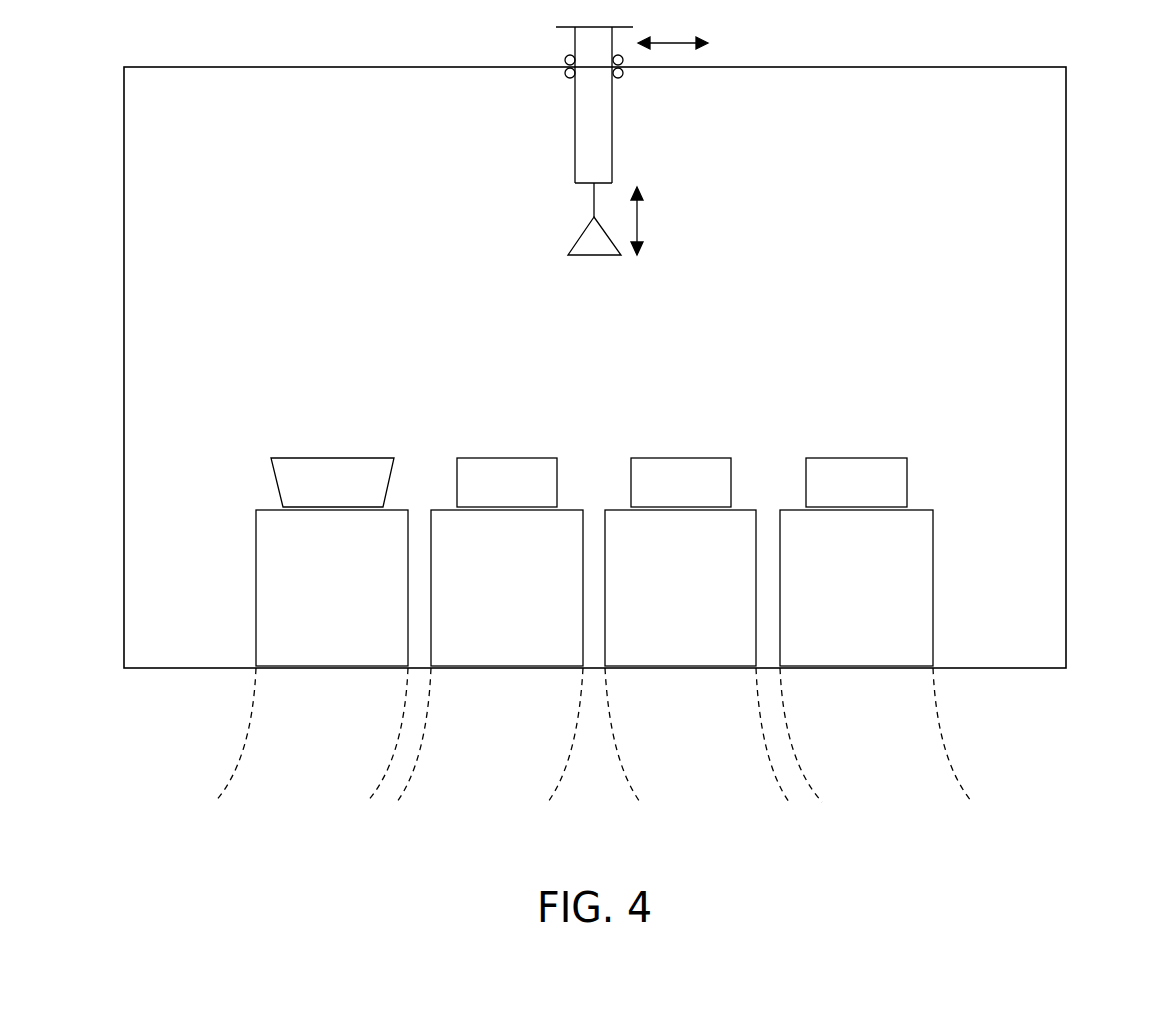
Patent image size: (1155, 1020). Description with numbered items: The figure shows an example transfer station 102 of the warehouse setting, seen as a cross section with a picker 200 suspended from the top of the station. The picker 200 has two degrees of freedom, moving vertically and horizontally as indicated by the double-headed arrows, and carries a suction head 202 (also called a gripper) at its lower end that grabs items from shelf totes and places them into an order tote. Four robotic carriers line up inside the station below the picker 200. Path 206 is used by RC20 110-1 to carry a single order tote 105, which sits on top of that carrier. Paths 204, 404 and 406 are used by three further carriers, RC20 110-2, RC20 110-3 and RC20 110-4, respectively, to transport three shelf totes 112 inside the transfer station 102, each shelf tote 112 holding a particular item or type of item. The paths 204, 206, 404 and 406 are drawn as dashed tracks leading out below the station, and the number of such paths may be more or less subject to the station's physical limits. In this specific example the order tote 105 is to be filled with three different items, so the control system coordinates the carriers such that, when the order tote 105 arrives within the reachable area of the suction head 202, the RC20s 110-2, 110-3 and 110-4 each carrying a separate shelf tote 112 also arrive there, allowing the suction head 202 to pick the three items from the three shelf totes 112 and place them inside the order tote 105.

The transfer station 102 is at (1067, 133).
The picker 200 is at (575, 103).
The suction head 202 is at (570, 254).
The order tote 105 is at (333, 456).
The shelf tote 112 is at (508, 457).
The RC20 110-1 is at (332, 668).
The RC20 110-2 is at (681, 668).
The RC20 110-3 is at (508, 668).
The RC20 110-4 is at (856, 668).
The path 204 is at (480, 775).
The path 206 is at (263, 730).
The path 404 is at (712, 775).
The path 406 is at (925, 785).